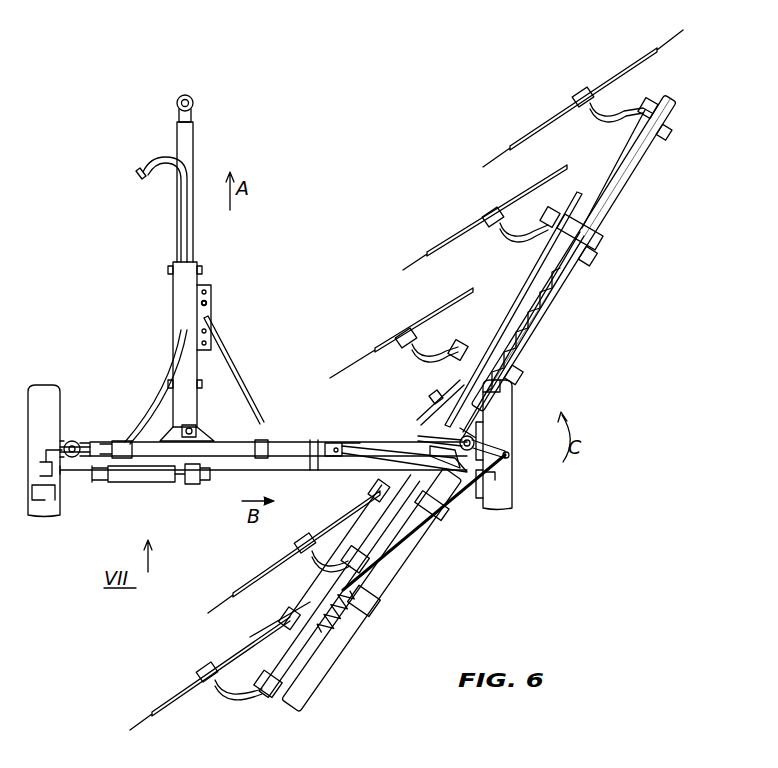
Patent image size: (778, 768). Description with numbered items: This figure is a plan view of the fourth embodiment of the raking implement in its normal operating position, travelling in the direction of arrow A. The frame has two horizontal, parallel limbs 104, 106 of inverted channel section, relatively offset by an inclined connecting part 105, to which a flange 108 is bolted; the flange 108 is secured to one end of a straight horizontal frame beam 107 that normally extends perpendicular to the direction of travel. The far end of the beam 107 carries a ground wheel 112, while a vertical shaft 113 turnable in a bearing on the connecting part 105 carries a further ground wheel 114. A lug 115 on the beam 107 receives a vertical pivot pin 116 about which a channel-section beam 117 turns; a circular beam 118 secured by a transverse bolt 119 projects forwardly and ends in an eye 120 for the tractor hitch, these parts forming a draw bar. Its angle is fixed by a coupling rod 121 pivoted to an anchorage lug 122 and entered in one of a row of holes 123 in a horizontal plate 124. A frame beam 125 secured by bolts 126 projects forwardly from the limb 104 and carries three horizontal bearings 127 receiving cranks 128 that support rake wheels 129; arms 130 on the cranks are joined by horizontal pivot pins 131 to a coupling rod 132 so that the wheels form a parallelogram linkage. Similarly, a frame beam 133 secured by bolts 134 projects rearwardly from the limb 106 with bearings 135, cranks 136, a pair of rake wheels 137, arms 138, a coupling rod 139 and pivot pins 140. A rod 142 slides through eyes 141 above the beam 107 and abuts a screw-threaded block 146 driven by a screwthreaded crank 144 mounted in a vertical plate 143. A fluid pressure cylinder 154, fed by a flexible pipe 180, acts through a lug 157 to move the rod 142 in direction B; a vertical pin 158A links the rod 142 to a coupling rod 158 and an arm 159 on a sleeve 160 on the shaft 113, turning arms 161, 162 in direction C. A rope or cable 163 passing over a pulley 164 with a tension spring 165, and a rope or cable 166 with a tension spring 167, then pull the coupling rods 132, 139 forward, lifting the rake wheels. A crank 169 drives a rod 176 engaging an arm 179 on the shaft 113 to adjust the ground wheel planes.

The limb 104 is at (522, 340).
The connecting part 105 is at (440, 418).
The limb 106 is at (418, 560).
The frame beam 107 is at (340, 440).
The flange 108 is at (430, 451).
The ground wheel 112 is at (50, 388).
The vertical shaft 113 is at (480, 428).
The ground wheel 114 is at (512, 500).
The lug 115 is at (170, 432).
The vertical pivot pin 116 is at (195, 432).
The beam 117 is at (175, 312).
The beam 118 is at (176, 133).
The transverse bolt 119 is at (170, 271).
The eye 120 is at (177, 104).
The coupling rod 121 is at (232, 362).
The anchorage lug 122 is at (262, 440).
The holes 123 is at (206, 292).
The horizontal plate 124 is at (208, 303).
The frame beam 125 is at (620, 193).
The bolts 126 is at (563, 290).
The horizontal bearings 127 is at (672, 158).
The crank 128 is at (578, 108).
The rake wheel 129 is at (510, 148).
The arm 130 is at (670, 98).
The horizontal pivot pins 131 is at (640, 122).
The coupling rod 132 is at (505, 272).
The frame beam 133 is at (318, 660).
The bolts 134 is at (410, 486).
The horizontal bearings 135 is at (396, 588).
The cranks 136 is at (305, 558).
The rake wheels 137 is at (285, 572).
The arms 138 is at (375, 545).
The coupling rod 139 is at (300, 603).
The pivot pins 140 is at (325, 560).
The eyes 141 is at (320, 440).
The rod 142 is at (232, 444).
The vertical plate 143 is at (83, 440).
The screwthreaded crank 144 is at (42, 468).
The screw-threaded block 146 is at (120, 443).
The fluid pressure cylinder 154 is at (135, 482).
The lug 157 is at (198, 480).
The coupling rod 158 is at (362, 441).
The vertical pin 158A is at (333, 456).
The arm 159 is at (512, 478).
The sleeve 160 is at (512, 394).
The arm 161 is at (418, 438).
The arm 162 is at (508, 440).
The rope, cable or the like 163 is at (532, 323).
The pulley 164 is at (588, 232).
The tension spring 165 is at (547, 302).
The rope, cable or the like 166 is at (462, 520).
The tension spring 167 is at (370, 612).
The crank 169 is at (42, 512).
The rod 176 is at (345, 474).
The arm 179 is at (478, 506).
The flexible pipe 180 is at (183, 195).